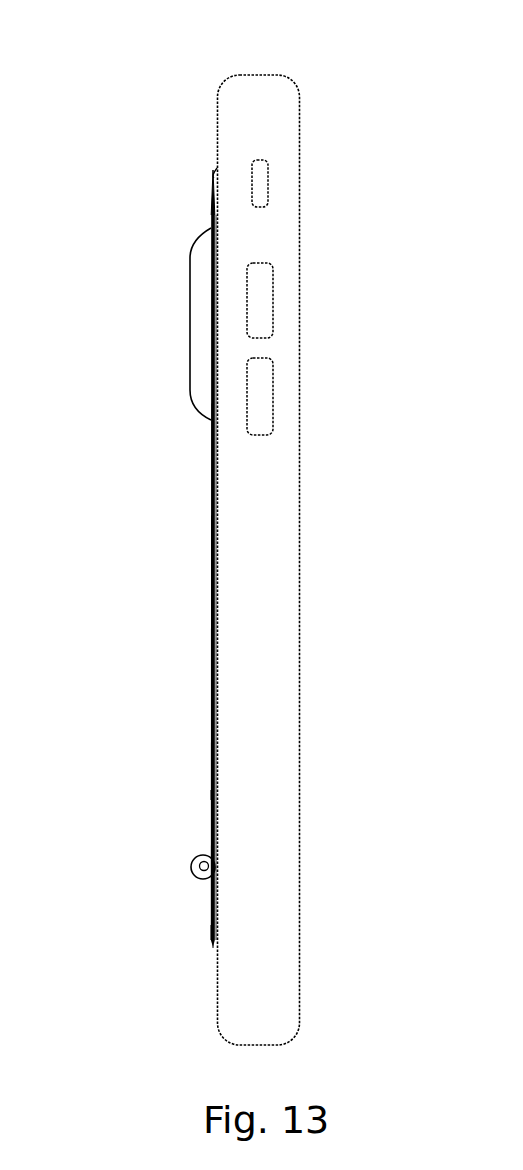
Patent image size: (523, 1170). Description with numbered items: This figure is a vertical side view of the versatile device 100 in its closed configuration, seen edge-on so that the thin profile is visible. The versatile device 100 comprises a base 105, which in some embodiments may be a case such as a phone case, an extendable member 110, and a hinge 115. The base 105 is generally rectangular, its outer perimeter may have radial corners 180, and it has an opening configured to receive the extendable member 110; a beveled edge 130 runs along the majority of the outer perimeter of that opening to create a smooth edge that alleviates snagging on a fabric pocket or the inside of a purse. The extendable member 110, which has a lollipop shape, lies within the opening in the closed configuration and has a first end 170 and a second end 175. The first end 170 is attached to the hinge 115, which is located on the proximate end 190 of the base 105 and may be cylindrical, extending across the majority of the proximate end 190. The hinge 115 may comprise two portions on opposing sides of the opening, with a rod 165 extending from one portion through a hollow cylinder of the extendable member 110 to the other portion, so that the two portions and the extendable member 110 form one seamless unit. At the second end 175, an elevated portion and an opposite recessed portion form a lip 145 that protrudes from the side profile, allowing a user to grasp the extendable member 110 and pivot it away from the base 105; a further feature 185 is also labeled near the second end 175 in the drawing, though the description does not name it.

The versatile device 100 is at (347, 93).
The base 105 is at (220, 708).
The extendable member 110 is at (213, 568).
The hinge 115 is at (208, 855).
The beveled edge 130 is at (223, 457).
The lip 145 is at (191, 252).
The rod 165 is at (191, 868).
The first end 170 is at (212, 800).
The second end 175 is at (212, 217).
The radial corners 180 is at (219, 945).
The hook 185 is at (217, 168).
The proximate end 190 is at (212, 930).